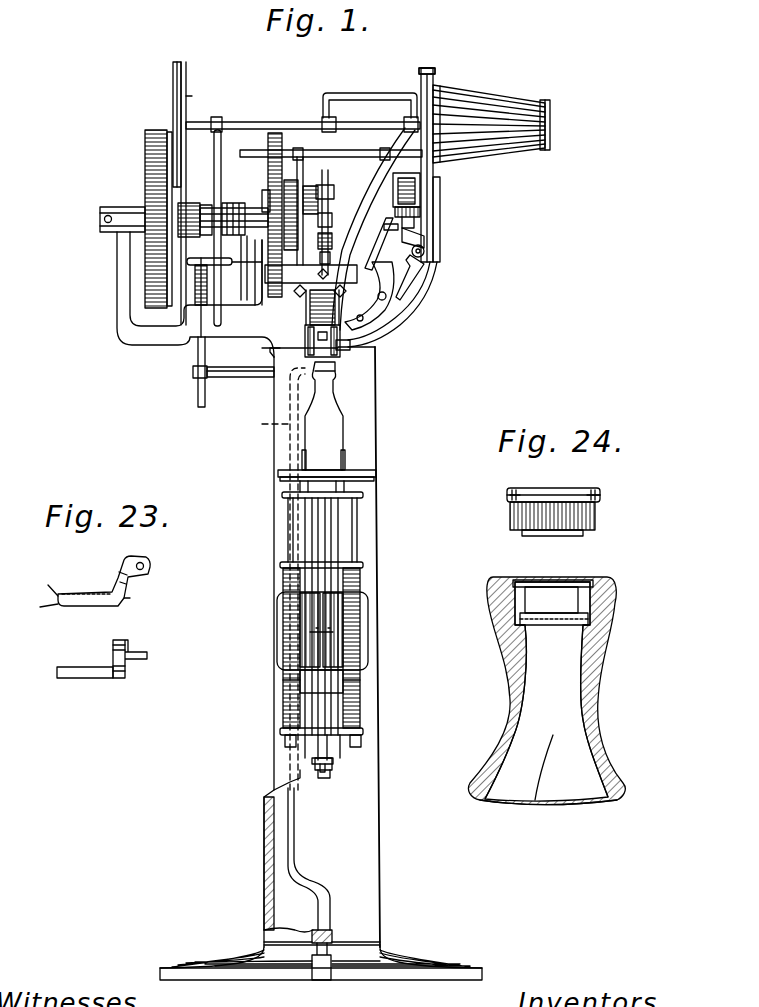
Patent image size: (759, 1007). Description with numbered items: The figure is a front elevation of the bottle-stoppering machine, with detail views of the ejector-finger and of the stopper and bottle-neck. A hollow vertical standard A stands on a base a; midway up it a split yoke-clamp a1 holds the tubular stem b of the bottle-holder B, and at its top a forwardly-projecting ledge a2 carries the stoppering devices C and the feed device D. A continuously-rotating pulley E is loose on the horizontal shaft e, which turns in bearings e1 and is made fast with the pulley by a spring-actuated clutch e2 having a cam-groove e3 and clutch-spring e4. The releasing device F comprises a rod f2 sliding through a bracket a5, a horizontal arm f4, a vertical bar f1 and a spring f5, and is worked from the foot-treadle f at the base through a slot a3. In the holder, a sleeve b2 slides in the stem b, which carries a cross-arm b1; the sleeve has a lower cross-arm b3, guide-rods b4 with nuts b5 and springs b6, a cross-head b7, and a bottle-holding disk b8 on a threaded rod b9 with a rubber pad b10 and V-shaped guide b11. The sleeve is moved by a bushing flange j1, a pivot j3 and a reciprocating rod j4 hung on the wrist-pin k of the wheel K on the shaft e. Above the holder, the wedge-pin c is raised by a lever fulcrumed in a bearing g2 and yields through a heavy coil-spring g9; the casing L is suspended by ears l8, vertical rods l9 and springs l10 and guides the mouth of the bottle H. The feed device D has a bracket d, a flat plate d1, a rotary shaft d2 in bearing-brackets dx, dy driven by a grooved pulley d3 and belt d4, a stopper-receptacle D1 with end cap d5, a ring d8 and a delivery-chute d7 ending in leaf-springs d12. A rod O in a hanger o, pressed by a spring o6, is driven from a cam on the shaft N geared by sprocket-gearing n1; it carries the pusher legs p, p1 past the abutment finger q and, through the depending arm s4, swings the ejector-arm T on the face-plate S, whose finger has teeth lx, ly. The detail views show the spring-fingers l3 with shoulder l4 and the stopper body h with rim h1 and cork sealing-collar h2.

In FIG. 1, the hollow vertical standard A is at (380, 770).
In FIG. 1, the base a is at (400, 956).
In FIG. 1, the split yoke-clamp a1 is at (369, 620).
In FIG. 1, the forwardly-projecting ledge a2 is at (306, 279).
In FIG. 1, the vertical slot a3 is at (326, 778).
In FIG. 1, the horizontally-projecting bracket a5 is at (240, 262).
In FIG. 1, the bottle-holder B is at (248, 615).
In FIG. 1, the tubular stem b is at (283, 576).
In FIG. 1, the rigid cross-arm b1 is at (364, 566).
In FIG. 1, the sleeve b2 is at (340, 534).
In FIG. 1, the lower cross-arm b3 is at (364, 733).
In FIG. 1, the vertical guide-rods b4 is at (288, 533).
In FIG. 1, the nuts b5 is at (285, 741).
In FIG. 1, the spring b6 is at (283, 681).
In FIG. 1, the cross-head b7 is at (364, 495).
In FIG. 1, the bottle-holding disk b8 is at (278, 473).
In FIG. 1, the threaded rod b9 is at (377, 475).
In FIG. 1, the rubber pad b10 is at (372, 472).
In FIG. 1, the V-shaped guide b11 is at (346, 465).
In FIG. 1, the stoppering devices C is at (200, 294).
In FIG. 1, the wedge-pin c is at (330, 218).
In FIG. 1, the feed device D is at (448, 228).
In FIG. 1, the stopper-receptacle D1 is at (489, 118).
In FIG. 1, the bracket d is at (393, 165).
In FIG. 1, the flat plate d1 is at (420, 73).
In FIG. 1, the horizontal rotary shaft d2 is at (240, 116).
In FIG. 1, the grooved pulley d3 is at (187, 86).
In FIG. 1, the belt d4 is at (174, 97).
In FIG. 1, the removable end cap d5 is at (564, 125).
In FIG. 1, the delivery-chute d7 is at (432, 298).
In FIG. 1, the ring d8 is at (434, 80).
In FIG. 1, the leaf-springs d12 is at (351, 346).
In FIG. 1, the bearing-bracket dx is at (221, 152).
In FIG. 1, the bearing-bracket dy is at (330, 96).
In FIG. 1, the continuously-rotating pulley E is at (145, 160).
In FIG. 1, the horizontal shaft e is at (103, 217).
In FIG. 1, the bearings e1 is at (256, 214).
In FIG. 1, the spring-actuated clutch e2 is at (200, 196).
In FIG. 1, the cam-groove e3 is at (207, 206).
In FIG. 1, the clutch-spring e4 is at (234, 236).
In FIG. 1, the releasing device F is at (233, 387).
In FIG. 1, the foot-treadle f is at (332, 938).
In FIG. 1, the vertical bar f1 is at (290, 820).
In FIG. 1, the rod f2 is at (196, 358).
In FIG. 1, the horizontal arm f4 is at (228, 378).
In FIG. 1, the spring f5 is at (195, 285).
In FIG. 1, the bearing g2 is at (322, 262).
In FIG. 1, the heavy coil-spring g9 is at (325, 235).
In FIG. 1, the bottle H is at (334, 398).
In FIG. 24, the bottle H is at (605, 700).
In FIG. 24, the metal body h is at (566, 655).
In FIG. 24, the top rim h1 is at (600, 493).
In FIG. 24, the cork sealing-collar h2 is at (596, 518).
In FIG. 1, the exterior flange j1 is at (305, 749).
In FIG. 1, the pivot j3 is at (340, 767).
In FIG. 1, the vertically-reciprocating rod j4 is at (346, 178).
In FIG. 1, the wheel K is at (293, 178).
In FIG. 1, the wrist-pin k is at (319, 200).
In FIG. 1, the cylindrical casing L is at (306, 341).
In FIG. 1, the ears l8 is at (284, 358).
In FIG. 1, the springs l10 is at (336, 306).
In FIG. 23, the spring-fingers l3 is at (103, 615).
In FIG. 23, the interior annular shoulder l4 is at (128, 598).
In FIG. 23, the vertical rods l9 is at (127, 560).
In FIG. 23, the fork end lx is at (40, 581).
In FIG. 23, the fork end ly is at (37, 607).
In FIG. 1, the horizontal shaft N is at (331, 153).
In FIG. 1, the sprocket-gearing n1 is at (268, 196).
In FIG. 1, the rod O is at (421, 181).
In FIG. 1, the hanger o is at (422, 207).
In FIG. 1, the spring o6 is at (422, 200).
In FIG. 1, the leg of stopper-pusher p is at (430, 243).
In FIG. 1, the leg of stopper-pusher p1 is at (426, 256).
In FIG. 1, the finger q is at (432, 255).
In FIG. 1, the face-plate S is at (400, 258).
In FIG. 1, the depending arm s4 is at (393, 238).
In FIG. 1, the ejector-arm T is at (406, 304).